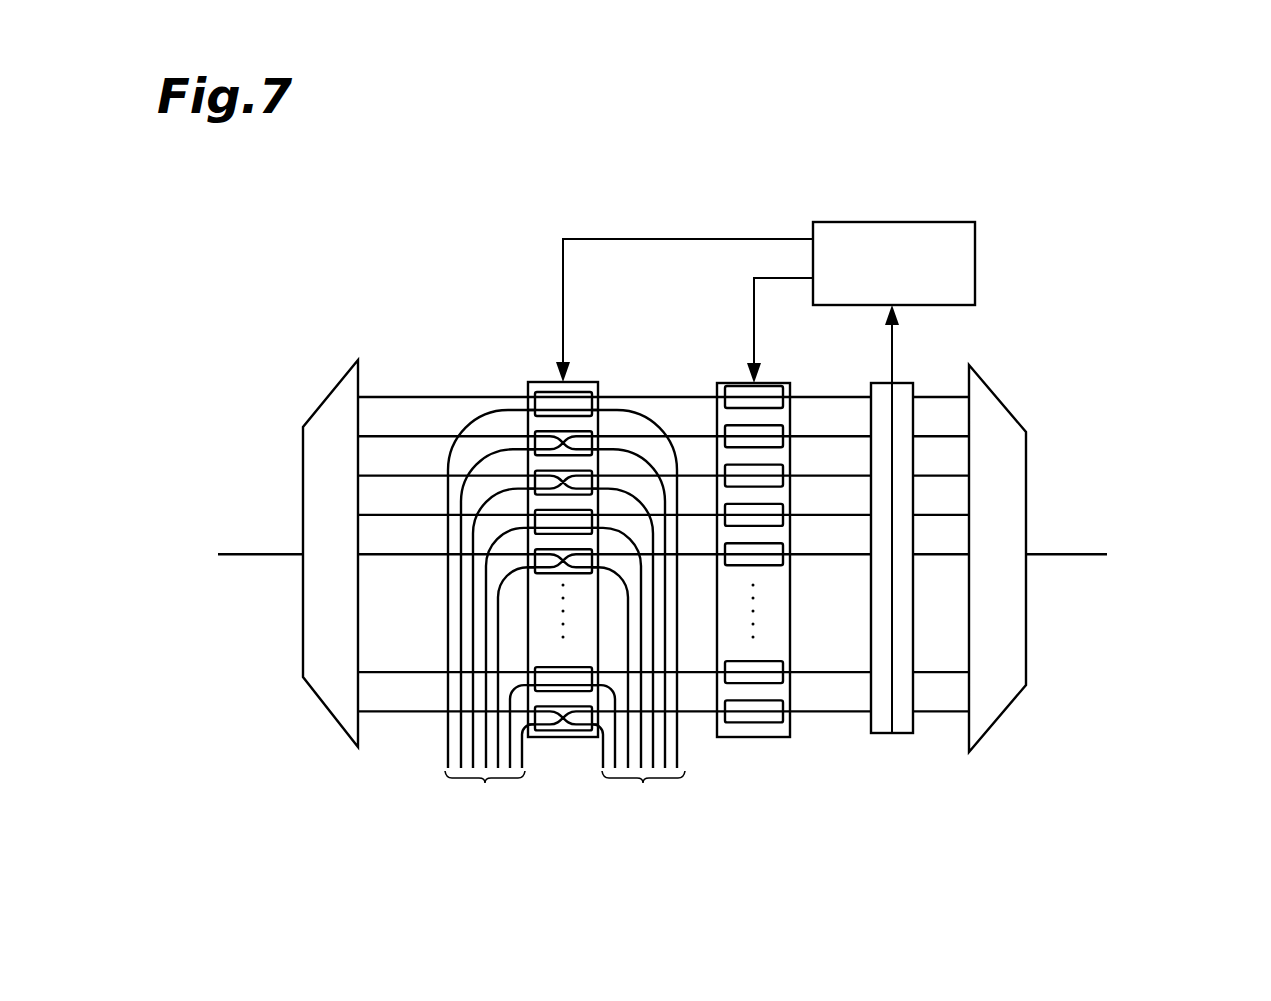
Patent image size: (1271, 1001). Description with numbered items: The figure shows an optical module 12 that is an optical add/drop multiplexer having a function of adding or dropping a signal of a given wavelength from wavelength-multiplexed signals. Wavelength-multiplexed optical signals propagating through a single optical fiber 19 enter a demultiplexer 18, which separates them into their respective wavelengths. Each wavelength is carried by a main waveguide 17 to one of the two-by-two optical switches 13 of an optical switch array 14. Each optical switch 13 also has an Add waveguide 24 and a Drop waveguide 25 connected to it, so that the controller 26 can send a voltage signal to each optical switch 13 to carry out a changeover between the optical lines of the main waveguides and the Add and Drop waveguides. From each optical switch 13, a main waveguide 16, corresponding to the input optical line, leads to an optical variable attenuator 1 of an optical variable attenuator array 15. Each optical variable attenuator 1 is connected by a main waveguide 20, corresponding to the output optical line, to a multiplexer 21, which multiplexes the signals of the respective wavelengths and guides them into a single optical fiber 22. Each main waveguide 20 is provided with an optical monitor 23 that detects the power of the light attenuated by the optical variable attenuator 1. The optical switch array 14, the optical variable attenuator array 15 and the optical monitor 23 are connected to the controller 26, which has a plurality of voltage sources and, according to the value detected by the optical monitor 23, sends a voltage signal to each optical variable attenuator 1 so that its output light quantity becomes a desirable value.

The optical variable attenuator 1 is at (738, 394).
The optical module 12 is at (428, 205).
The 2×2 optical switch 13 is at (555, 556).
The optical switch array 14 is at (561, 738).
The optical variable attenuator array 15 is at (749, 556).
The main waveguide 16 is at (647, 396).
The main waveguide 17 is at (397, 396).
The demultiplexer 18 is at (318, 412).
The optical fiber 19 is at (252, 553).
The main waveguide 20 is at (832, 396).
The multiplexer 21 is at (1003, 425).
The optical fiber 22 is at (1076, 553).
The optical monitor 23 is at (892, 735).
The Add waveguide 24 is at (447, 752).
The Drop waveguide 25 is at (683, 756).
The controller 26 is at (893, 222).